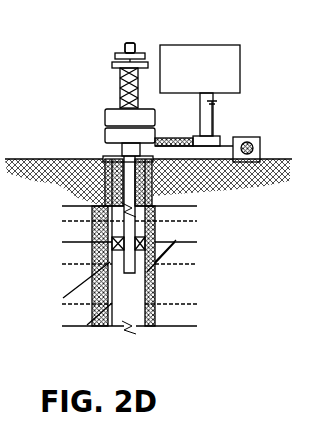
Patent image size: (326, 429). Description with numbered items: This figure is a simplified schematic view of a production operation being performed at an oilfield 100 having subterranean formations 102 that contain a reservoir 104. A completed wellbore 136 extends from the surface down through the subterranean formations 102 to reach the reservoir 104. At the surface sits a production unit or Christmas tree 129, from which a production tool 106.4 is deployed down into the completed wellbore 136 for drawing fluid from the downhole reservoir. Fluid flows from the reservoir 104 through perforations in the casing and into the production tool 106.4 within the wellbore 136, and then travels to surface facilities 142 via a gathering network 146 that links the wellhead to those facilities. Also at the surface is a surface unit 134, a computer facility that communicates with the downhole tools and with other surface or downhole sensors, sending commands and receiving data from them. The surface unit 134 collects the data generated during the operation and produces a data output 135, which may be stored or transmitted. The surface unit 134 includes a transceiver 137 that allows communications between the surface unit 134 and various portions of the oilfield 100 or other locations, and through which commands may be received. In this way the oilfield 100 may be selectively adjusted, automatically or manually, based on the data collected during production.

The oilfield 100 is at (62, 83).
The Christmas tree 129 is at (127, 44).
The data output 135 is at (216, 45).
The transceiver 137 is at (215, 117).
The surface unit 134 is at (197, 137).
The gathering network 146 is at (230, 160).
The surface facilities 142 is at (259, 139).
The wellbore 136 is at (167, 198).
The production tool 106.4 is at (100, 263).
The subterranean formations 102 is at (208, 250).
The reservoir 104 is at (197, 293).